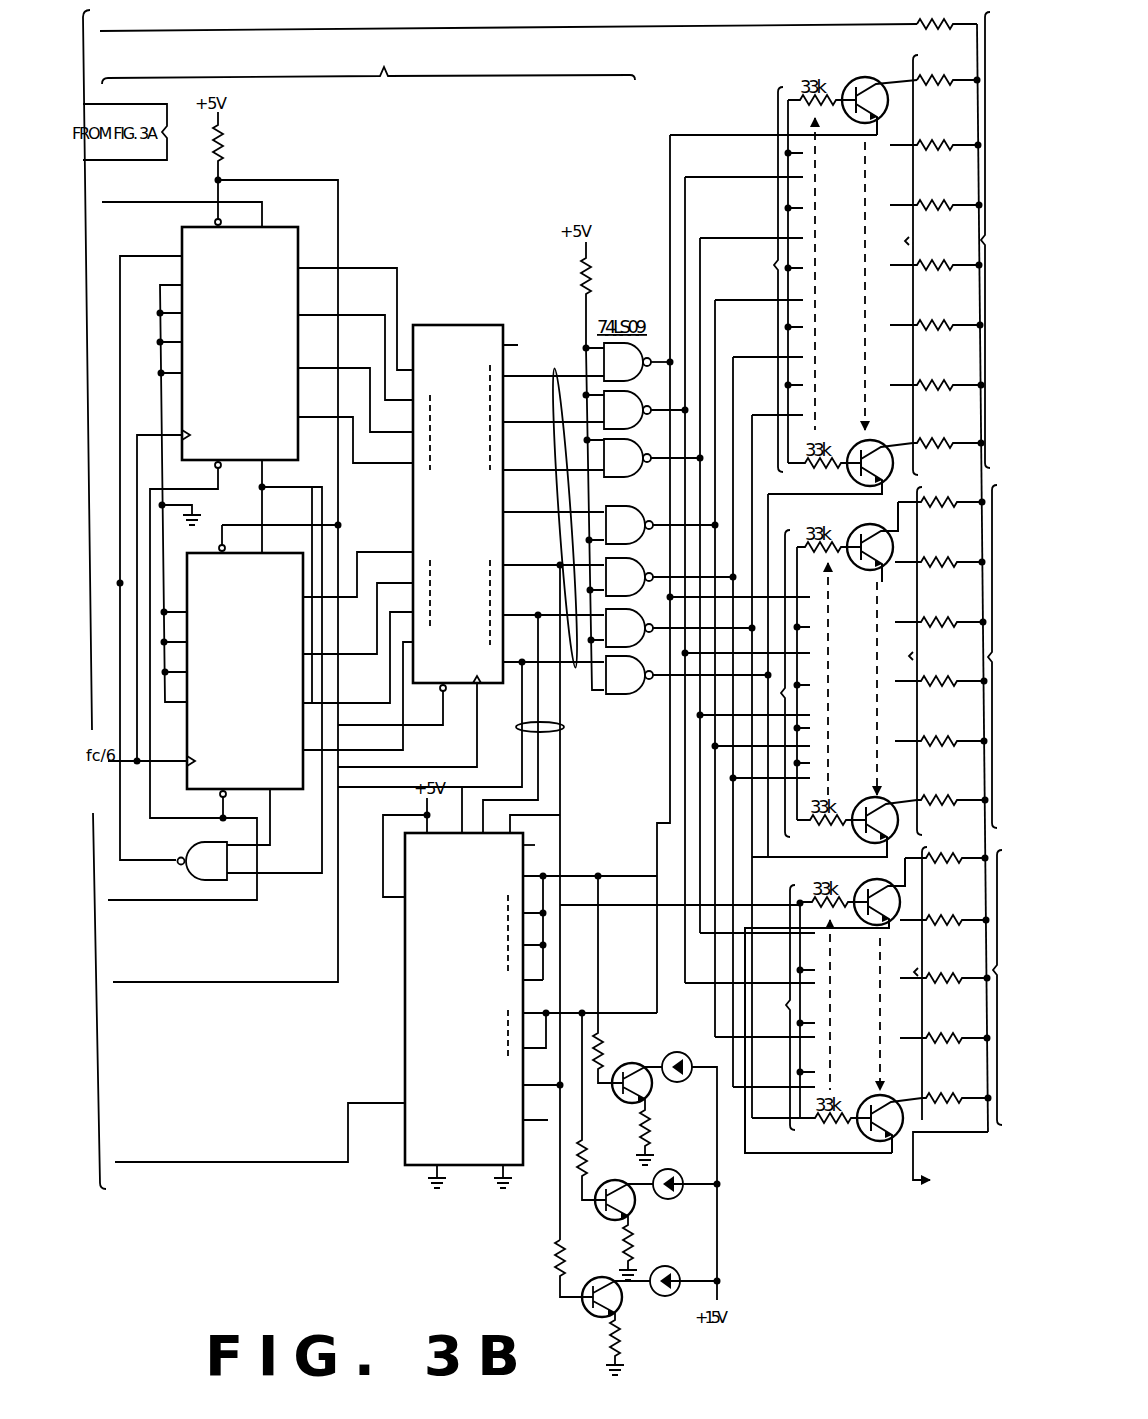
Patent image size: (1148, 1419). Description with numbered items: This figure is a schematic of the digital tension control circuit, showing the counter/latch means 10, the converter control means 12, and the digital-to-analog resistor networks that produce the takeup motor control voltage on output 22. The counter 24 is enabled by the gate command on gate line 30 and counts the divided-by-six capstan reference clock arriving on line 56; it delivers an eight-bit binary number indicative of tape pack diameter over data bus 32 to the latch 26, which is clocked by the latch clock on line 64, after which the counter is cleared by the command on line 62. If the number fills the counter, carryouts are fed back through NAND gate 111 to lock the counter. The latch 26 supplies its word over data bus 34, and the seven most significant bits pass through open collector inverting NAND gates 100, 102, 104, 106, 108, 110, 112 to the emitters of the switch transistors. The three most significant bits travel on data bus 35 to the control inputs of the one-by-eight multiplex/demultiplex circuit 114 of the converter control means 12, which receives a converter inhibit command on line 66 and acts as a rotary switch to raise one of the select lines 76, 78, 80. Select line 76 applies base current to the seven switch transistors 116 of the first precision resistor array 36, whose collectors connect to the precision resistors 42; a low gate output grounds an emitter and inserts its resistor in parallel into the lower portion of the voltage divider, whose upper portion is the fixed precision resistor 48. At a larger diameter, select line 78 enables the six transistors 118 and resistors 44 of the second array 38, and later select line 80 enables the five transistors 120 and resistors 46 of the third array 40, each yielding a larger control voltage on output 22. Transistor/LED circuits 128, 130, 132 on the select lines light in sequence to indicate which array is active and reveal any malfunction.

The counter/latch means 10 is at (368, 64).
The converter control means 12 is at (400, 1036).
The output 22 is at (913, 1184).
The counter 24 is at (296, 548).
The latch 26 is at (452, 322).
The gate line 30 is at (120, 202).
The data bus 32 is at (346, 272).
The data bus 34 is at (556, 376).
The data bus 35 is at (564, 727).
The precision resistor array 36 is at (951, 572).
The precision resistor array 38 is at (956, 653).
The precision resistor array 40 is at (961, 980).
The precision resistors 42 is at (900, 265).
The resistors 44 is at (904, 661).
The resistors 46 is at (910, 983).
The fixed precision resistor 48 is at (922, 28).
The line 56 is at (112, 765).
The line 62 is at (150, 900).
The line 64 is at (150, 982).
The line 66 is at (136, 1163).
The select line 76 is at (668, 727).
The select line 78 is at (628, 907).
The select line 80 is at (627, 1012).
The NAND gate 100 is at (638, 358).
The NAND gate 102 is at (637, 394).
The NAND gate 104 is at (626, 480).
The NAND gate 106 is at (620, 506).
The NAND gate 108 is at (628, 562).
The NAND gate 110 is at (628, 616).
The NAND gate 111 is at (192, 846).
The NAND gate 112 is at (628, 666).
The multiplex/demultiplex circuit 114 is at (541, 845).
The switch transistors 116 is at (764, 279).
The transistors 118 is at (772, 683).
The transistors 120 is at (761, 1007).
The transistor/light emitting diode circuit 128 is at (650, 1100).
The transistor/light emitting diode circuit 130 is at (648, 1212).
The transistor/light emitting diode circuit 132 is at (640, 1312).